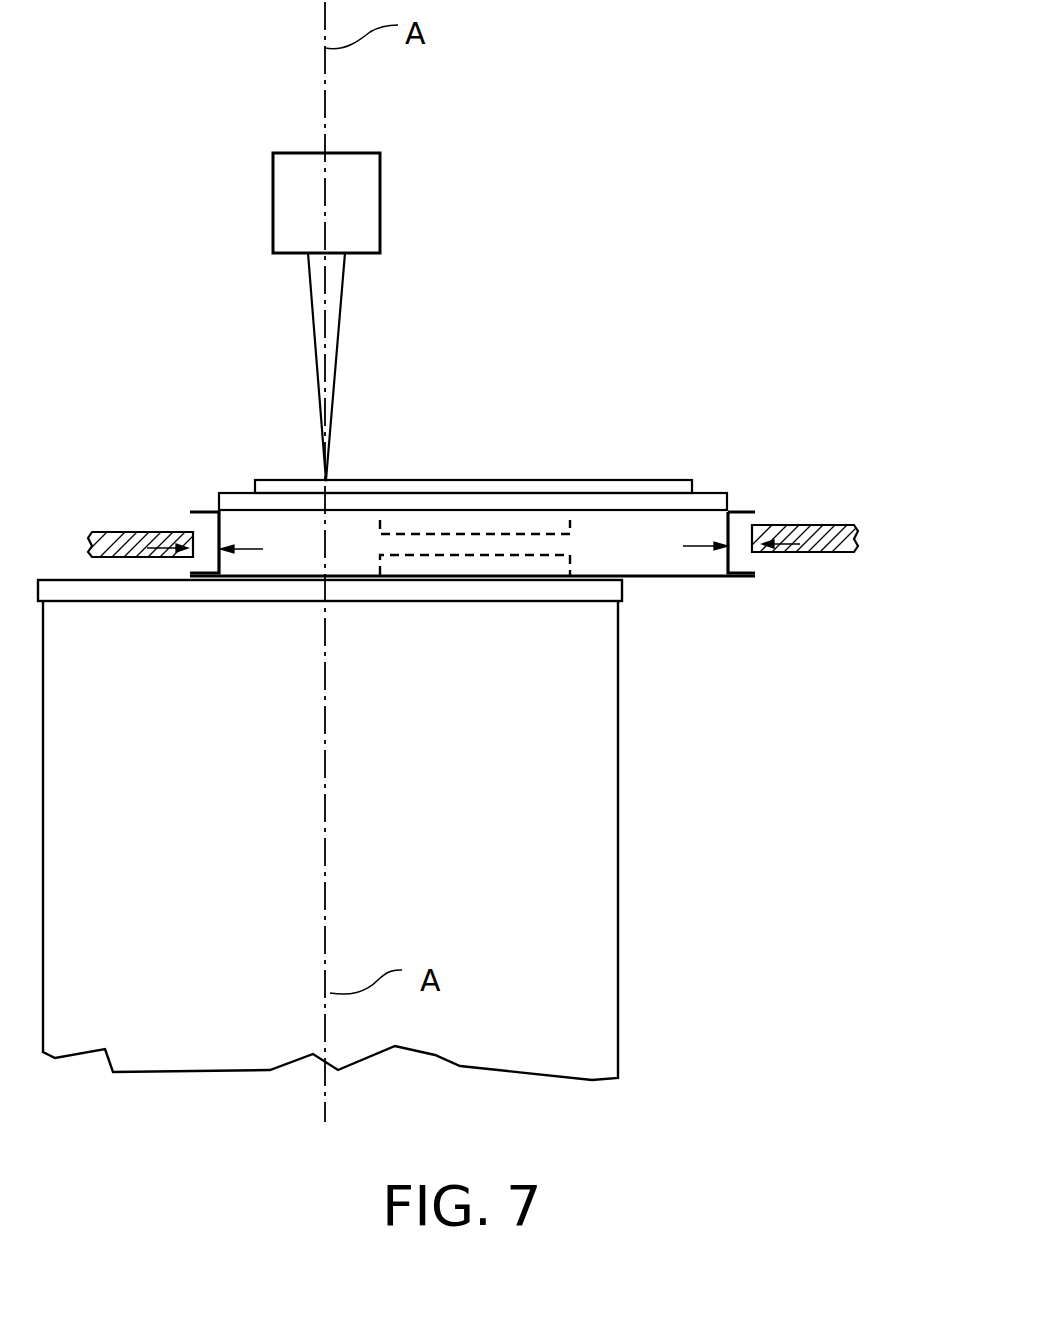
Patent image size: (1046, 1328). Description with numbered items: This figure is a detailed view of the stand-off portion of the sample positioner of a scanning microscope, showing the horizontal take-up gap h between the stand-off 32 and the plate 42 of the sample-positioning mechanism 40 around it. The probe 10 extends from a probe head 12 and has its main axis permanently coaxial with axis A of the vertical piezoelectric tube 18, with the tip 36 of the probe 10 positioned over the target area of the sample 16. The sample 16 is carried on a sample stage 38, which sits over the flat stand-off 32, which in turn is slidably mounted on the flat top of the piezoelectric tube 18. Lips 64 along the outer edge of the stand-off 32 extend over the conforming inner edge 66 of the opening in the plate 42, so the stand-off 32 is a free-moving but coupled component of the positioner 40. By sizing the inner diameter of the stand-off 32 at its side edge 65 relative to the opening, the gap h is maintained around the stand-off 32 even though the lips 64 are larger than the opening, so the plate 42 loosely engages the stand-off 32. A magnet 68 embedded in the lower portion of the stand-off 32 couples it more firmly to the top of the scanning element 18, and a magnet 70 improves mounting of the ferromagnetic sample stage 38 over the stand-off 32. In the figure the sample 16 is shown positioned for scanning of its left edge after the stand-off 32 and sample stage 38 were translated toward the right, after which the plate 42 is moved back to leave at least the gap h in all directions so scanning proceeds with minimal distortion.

The probe 10 is at (327, 312).
The light source 12 is at (362, 216).
The sample 16 is at (562, 486).
The piezoelectric tube 18 is at (553, 908).
The stand-off 32 is at (633, 577).
The tip 36 is at (326, 480).
The sample stage 38 is at (722, 490).
The sample-positioning mechanism 40 is at (597, 218).
The plate 42 is at (88, 543).
The lips 64 is at (199, 512).
The side edge 65 is at (220, 560).
The inner edge 66 is at (178, 533).
The magnet 68 is at (522, 558).
The magnet 70 is at (387, 520).